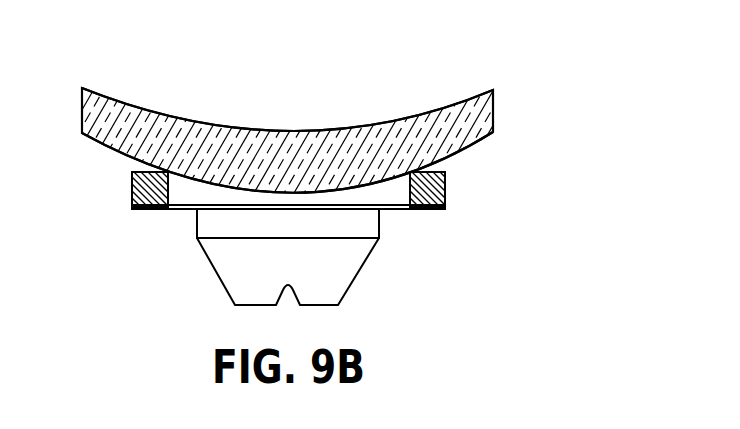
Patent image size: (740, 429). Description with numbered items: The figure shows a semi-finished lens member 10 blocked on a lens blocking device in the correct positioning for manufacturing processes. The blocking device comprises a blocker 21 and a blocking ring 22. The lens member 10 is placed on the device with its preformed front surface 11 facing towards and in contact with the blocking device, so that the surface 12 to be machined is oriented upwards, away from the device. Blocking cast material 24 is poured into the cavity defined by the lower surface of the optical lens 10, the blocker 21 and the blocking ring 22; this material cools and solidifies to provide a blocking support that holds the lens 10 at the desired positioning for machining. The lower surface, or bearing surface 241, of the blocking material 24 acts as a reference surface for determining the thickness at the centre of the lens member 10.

The lens member 10 is at (493, 107).
The preformed front surface 11 is at (477, 143).
The surface to be machined 12 is at (422, 109).
The blocker 21 is at (338, 260).
The blocking ring 22 is at (437, 193).
The blocking cast material 24 is at (187, 192).
The bearing surface 241 is at (385, 210).